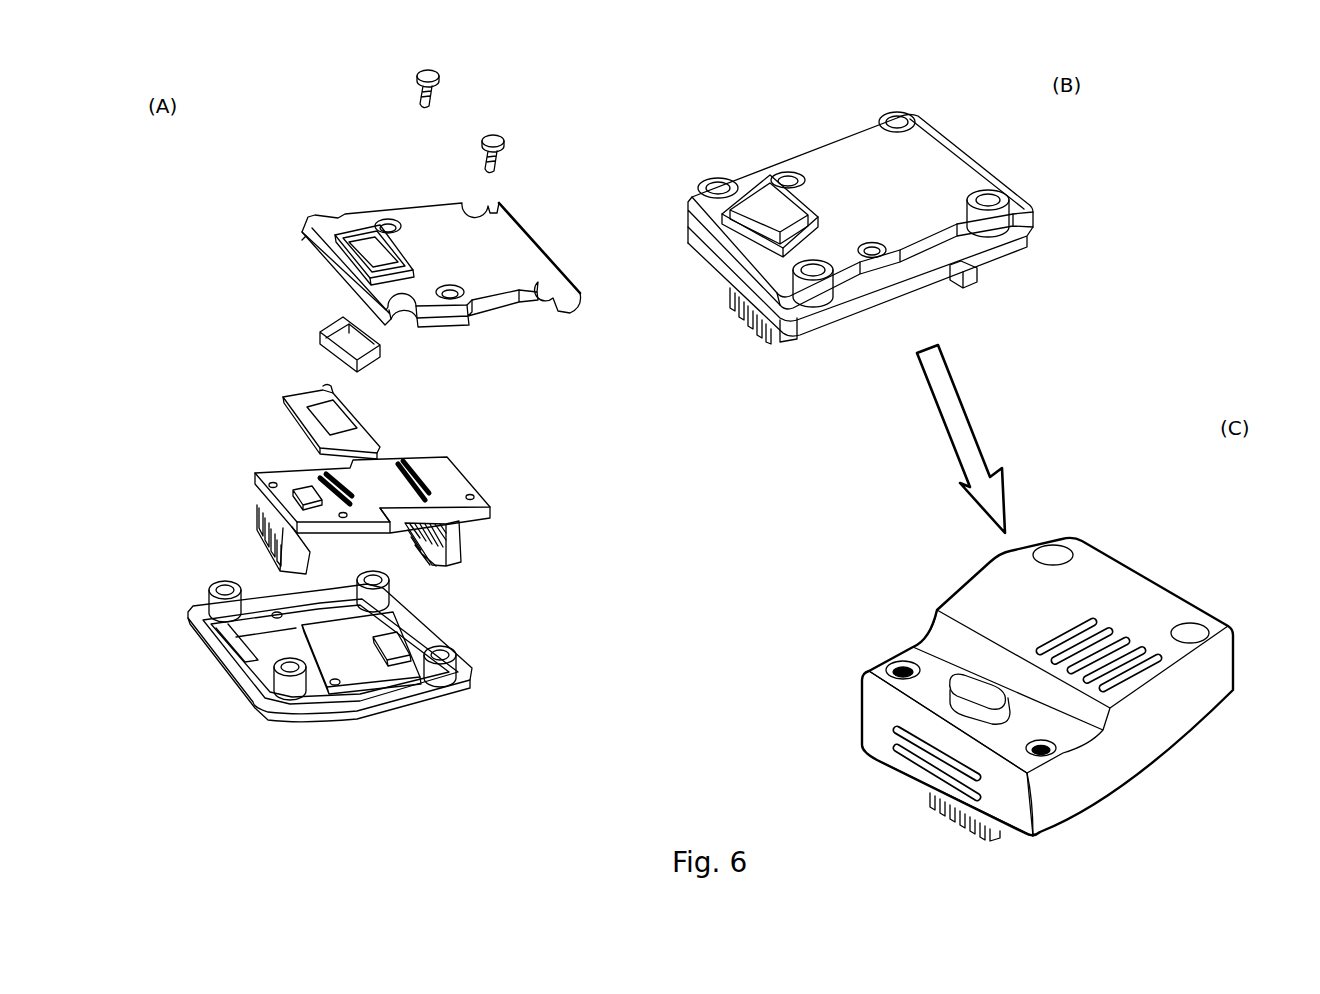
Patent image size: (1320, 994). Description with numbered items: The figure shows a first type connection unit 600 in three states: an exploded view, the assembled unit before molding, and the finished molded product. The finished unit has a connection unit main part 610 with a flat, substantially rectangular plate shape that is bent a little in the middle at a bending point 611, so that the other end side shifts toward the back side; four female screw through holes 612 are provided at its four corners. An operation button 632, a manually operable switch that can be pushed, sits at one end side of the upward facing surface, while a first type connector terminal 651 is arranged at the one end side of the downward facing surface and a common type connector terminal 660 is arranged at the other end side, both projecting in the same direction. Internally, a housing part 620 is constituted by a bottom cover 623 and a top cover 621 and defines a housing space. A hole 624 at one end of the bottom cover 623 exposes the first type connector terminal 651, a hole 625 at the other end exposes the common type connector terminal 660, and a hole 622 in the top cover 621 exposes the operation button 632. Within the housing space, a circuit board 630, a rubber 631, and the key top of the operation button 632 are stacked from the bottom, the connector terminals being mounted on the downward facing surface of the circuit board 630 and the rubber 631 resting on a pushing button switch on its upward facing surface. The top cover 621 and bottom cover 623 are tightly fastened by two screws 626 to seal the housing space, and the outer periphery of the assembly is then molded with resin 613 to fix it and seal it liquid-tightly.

The connection unit 600 is at (1097, 490).
The connection unit main part 610 is at (1127, 560).
The bending point 611 is at (905, 605).
The female screw through hole 612 is at (1052, 546).
The resin 613 is at (862, 720).
The housing part 620 is at (530, 240).
The top cover 621 is at (432, 212).
The hole 622 is at (372, 232).
The bottom cover 623 is at (335, 710).
The hole 624 is at (215, 673).
The hole 625 is at (420, 642).
The screw 626 is at (440, 76).
The circuit board 630 is at (290, 470).
The rubber 631 is at (305, 400).
The operation button 632 is at (335, 322).
The first type connector terminal 651 is at (262, 522).
The common type connector terminal 660 is at (462, 546).